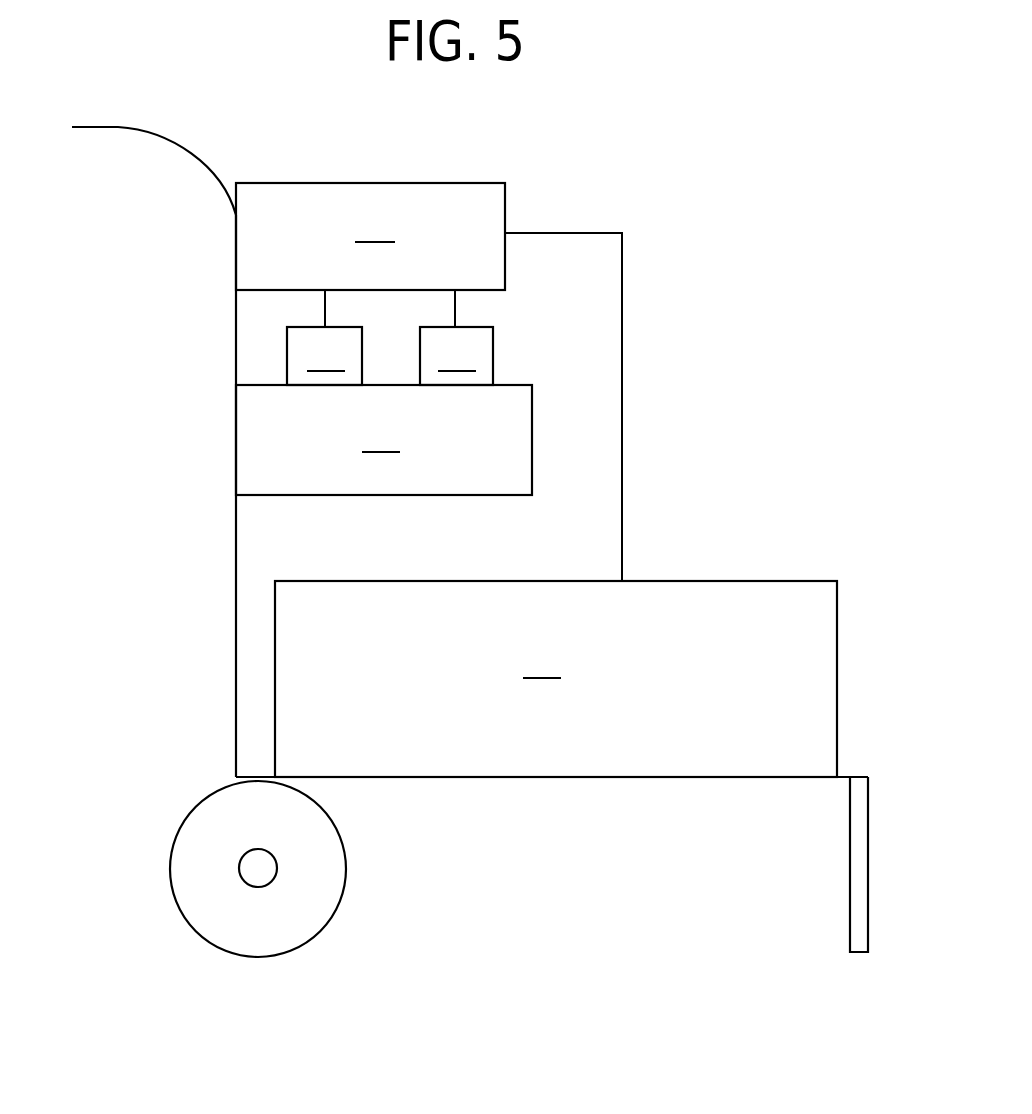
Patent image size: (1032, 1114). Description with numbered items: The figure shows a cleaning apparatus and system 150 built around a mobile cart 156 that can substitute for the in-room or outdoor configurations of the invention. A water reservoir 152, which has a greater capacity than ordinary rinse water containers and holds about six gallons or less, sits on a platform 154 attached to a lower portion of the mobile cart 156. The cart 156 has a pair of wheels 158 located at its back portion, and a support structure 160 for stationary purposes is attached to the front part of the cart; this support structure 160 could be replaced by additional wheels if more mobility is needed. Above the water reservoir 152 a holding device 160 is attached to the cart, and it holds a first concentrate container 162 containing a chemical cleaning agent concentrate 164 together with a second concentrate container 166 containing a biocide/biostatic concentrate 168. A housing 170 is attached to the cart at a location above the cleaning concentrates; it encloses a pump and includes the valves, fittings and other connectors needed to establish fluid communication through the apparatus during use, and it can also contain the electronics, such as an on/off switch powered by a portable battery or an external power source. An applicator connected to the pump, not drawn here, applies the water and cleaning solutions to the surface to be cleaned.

The apparatuses and systems 150 is at (130, 538).
The water reservoir 152 is at (556, 679).
The platform 154 is at (533, 778).
The mobile cart 156 is at (238, 604).
The wheels 158 is at (347, 880).
The support structure 160 is at (860, 868).
The first concentrate container 162 is at (345, 332).
The chemical cleaning agent concentrate 164 is at (324, 356).
The second concentrate container 166 is at (483, 332).
The biocide/biostatic concentrate 168 is at (456, 356).
The housing 170 is at (429, 382).